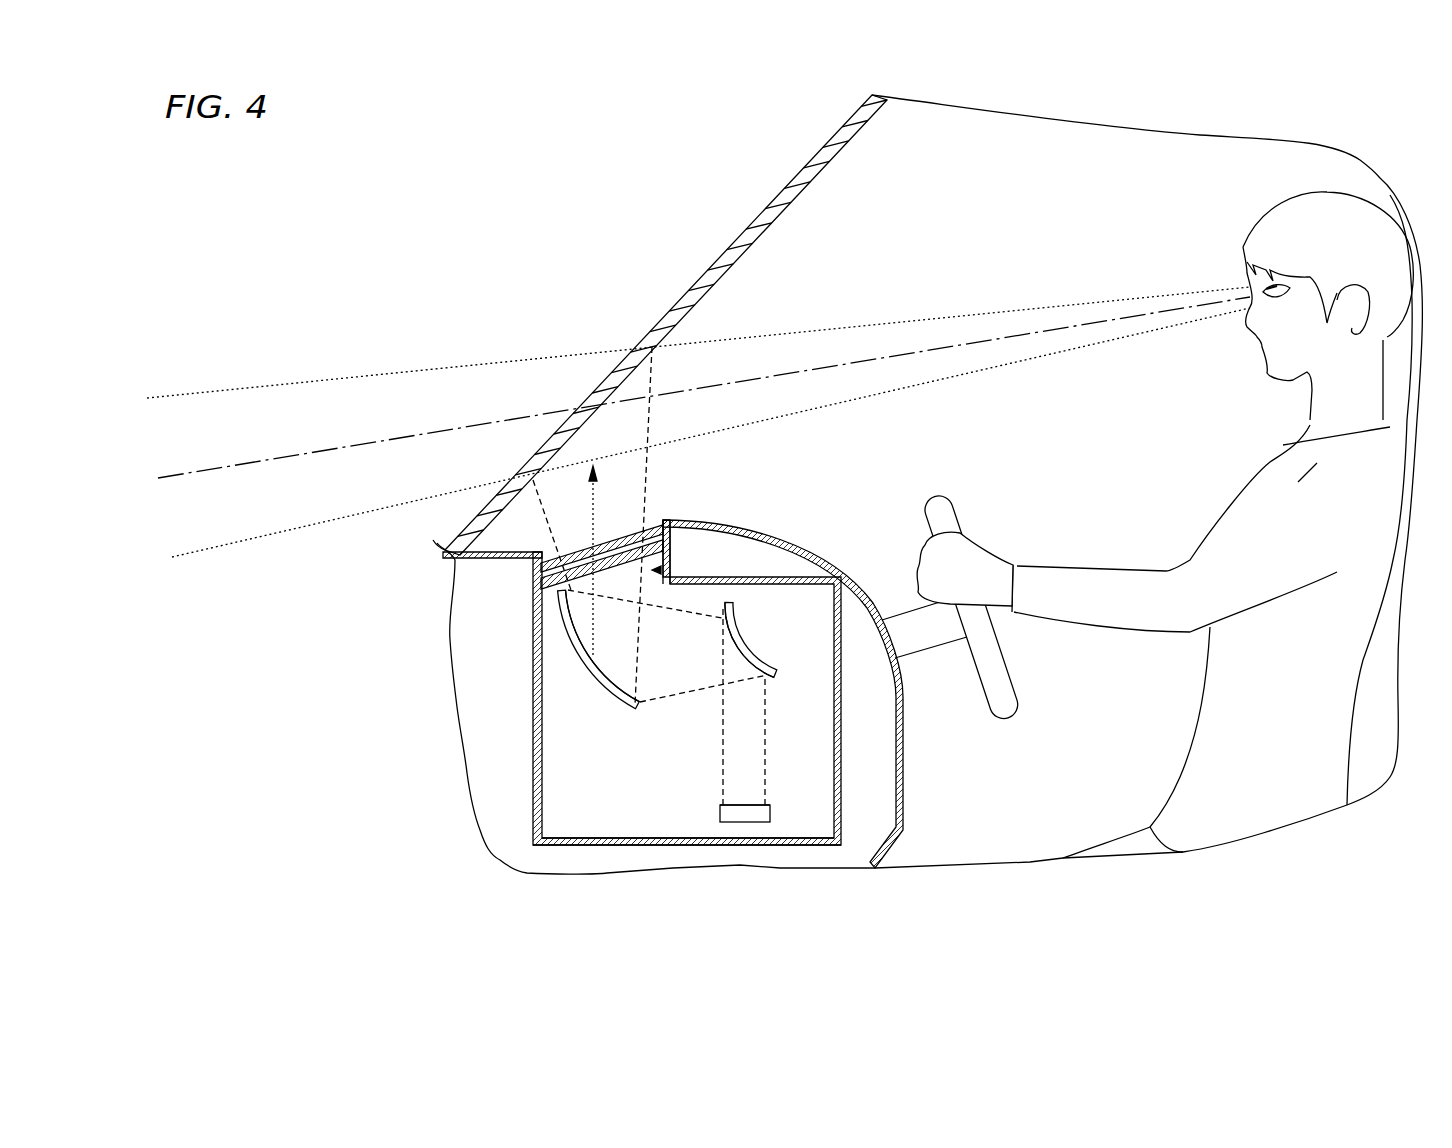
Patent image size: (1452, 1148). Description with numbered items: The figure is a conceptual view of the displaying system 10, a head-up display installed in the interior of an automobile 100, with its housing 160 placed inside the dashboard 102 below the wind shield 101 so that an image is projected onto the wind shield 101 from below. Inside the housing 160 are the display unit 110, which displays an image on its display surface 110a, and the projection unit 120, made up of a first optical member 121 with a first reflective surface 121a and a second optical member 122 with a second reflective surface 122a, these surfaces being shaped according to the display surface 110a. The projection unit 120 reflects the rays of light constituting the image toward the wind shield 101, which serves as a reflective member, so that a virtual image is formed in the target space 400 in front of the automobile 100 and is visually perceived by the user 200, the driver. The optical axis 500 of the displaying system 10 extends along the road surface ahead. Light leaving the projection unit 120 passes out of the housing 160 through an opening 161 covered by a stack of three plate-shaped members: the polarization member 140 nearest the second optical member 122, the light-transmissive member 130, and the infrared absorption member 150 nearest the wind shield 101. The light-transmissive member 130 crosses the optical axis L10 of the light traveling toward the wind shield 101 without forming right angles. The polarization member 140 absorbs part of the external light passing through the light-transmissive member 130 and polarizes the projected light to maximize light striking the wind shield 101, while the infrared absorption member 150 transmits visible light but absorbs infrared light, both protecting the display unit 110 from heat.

The displaying system 10 is at (700, 848).
The automobile 100 is at (452, 622).
The wind shield (reflective member) 101 is at (790, 192).
The dashboard 102 is at (907, 768).
The display unit 110 is at (770, 813).
The display surface 110a is at (742, 803).
The projection unit 120 is at (680, 696).
The first optical member 121 is at (753, 667).
The first reflective surface 121a is at (735, 660).
The second optical member 122 is at (620, 702).
The second reflective surface 122a is at (603, 672).
The light-transmissive member 130 is at (547, 573).
The polarization member 140 is at (546, 584).
The infrared absorption member 150 is at (555, 551).
The housing 160 is at (603, 846).
The opening 161 is at (665, 562).
The user (driver) 200 is at (1262, 238).
The target space 400 is at (247, 386).
The optical axis 500 is at (197, 470).
The optical axis L10 is at (598, 497).